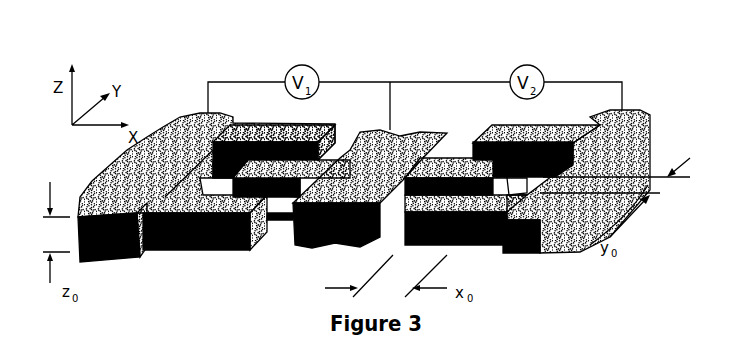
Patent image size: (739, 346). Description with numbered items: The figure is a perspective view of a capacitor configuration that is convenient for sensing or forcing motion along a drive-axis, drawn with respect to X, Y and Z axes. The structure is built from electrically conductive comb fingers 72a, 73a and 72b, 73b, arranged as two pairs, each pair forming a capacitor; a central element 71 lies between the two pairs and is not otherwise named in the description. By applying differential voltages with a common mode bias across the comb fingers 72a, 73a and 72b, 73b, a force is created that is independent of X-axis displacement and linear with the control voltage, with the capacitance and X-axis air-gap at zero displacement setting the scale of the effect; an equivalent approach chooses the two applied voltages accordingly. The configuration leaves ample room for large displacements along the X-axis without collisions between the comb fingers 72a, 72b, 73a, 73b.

The piezoelectric material body 71 is at (367, 165).
The electrically conductive comb finger 72a is at (268, 165).
The electrically conductive comb finger 72b is at (465, 165).
The electrically conductive comb finger 73a is at (193, 245).
The electrically conductive comb finger 73b is at (458, 247).